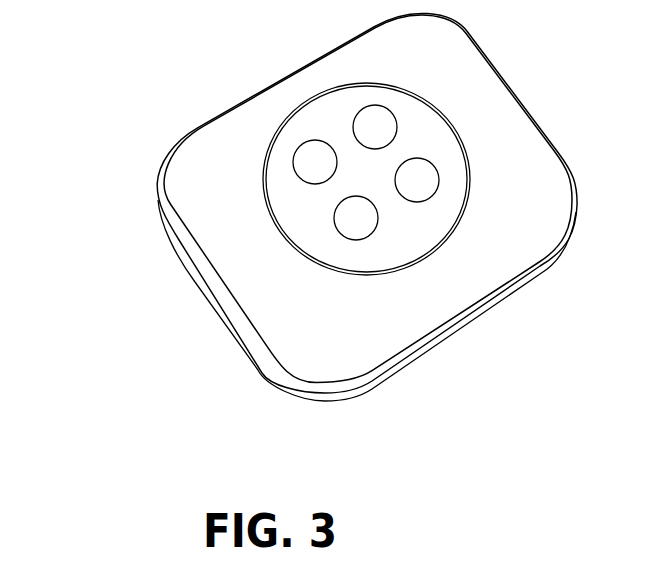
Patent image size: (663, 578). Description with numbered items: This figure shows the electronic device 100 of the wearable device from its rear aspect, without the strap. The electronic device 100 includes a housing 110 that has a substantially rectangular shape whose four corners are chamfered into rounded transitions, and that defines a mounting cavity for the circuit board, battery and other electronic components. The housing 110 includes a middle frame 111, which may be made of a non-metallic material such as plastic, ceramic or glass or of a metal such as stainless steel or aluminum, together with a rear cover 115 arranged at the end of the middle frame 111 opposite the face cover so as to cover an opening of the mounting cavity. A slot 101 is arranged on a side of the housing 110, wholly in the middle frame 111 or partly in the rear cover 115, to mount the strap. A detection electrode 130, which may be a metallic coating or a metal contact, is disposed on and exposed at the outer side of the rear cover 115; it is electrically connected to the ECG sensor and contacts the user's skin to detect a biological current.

The electronic device 100 is at (312, 243).
The housing 110 is at (157, 192).
The slot 101 is at (202, 278).
The middle frame 111 is at (268, 383).
The rear cover 115 is at (318, 360).
The detection electrode 130 is at (438, 210).